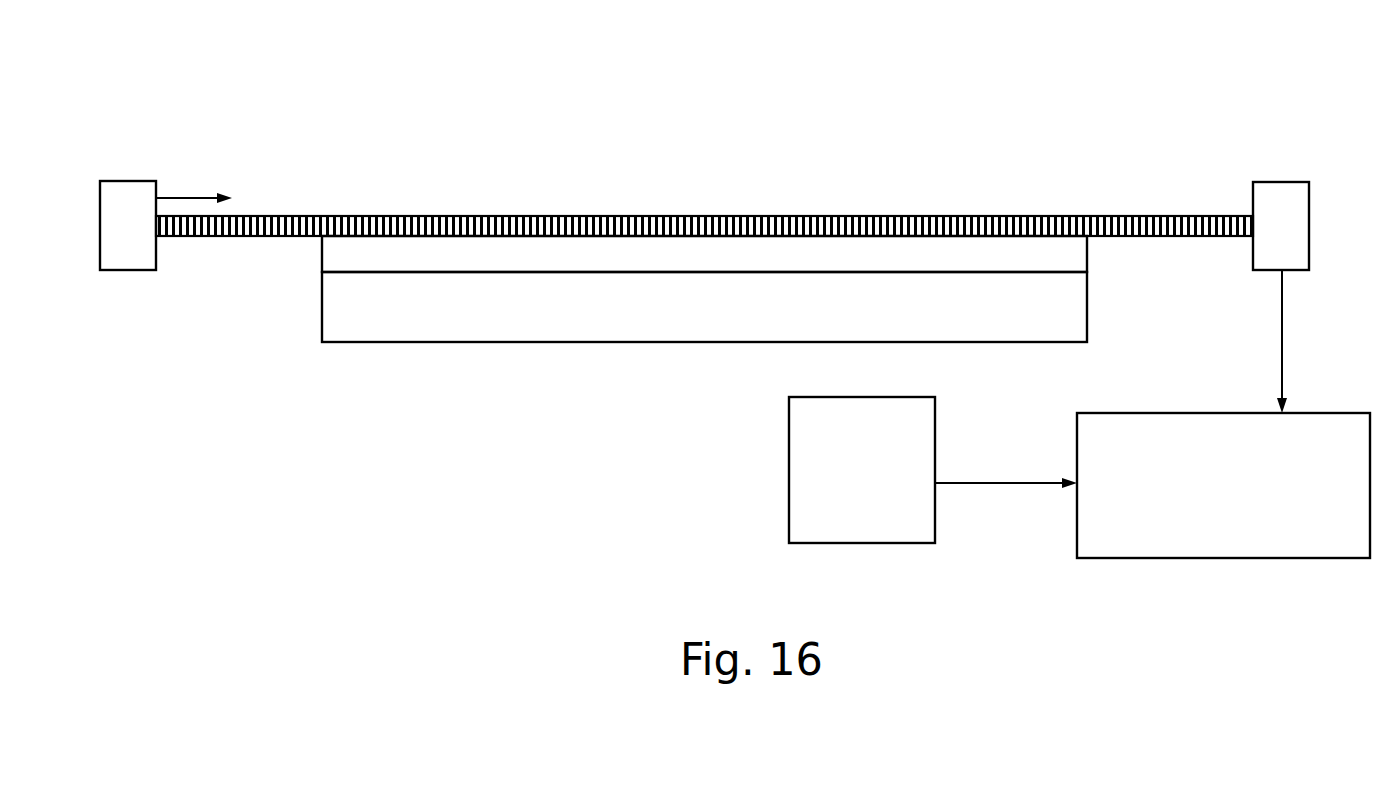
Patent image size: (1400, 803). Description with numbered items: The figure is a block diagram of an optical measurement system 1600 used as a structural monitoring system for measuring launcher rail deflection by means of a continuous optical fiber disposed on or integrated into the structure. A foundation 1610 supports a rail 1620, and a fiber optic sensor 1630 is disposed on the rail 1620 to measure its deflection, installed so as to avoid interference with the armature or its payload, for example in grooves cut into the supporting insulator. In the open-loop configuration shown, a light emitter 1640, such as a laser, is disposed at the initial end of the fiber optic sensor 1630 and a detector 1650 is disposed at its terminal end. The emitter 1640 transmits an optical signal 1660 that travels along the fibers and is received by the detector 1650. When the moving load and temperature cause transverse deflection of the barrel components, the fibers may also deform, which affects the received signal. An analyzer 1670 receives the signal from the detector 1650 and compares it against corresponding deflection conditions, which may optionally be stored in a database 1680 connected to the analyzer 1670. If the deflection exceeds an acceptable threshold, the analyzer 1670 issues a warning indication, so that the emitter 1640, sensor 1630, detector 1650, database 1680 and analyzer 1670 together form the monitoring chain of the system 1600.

The system 1600 is at (428, 82).
The foundation 1610 is at (557, 343).
The rail 1620 is at (322, 251).
The fiber optic sensor 1630 is at (617, 216).
The light emitter 1640 is at (133, 181).
The detector 1650 is at (1253, 192).
The optical signal 1660 is at (229, 197).
The analyzer 1670 is at (1181, 474).
The database 1680 is at (881, 475).